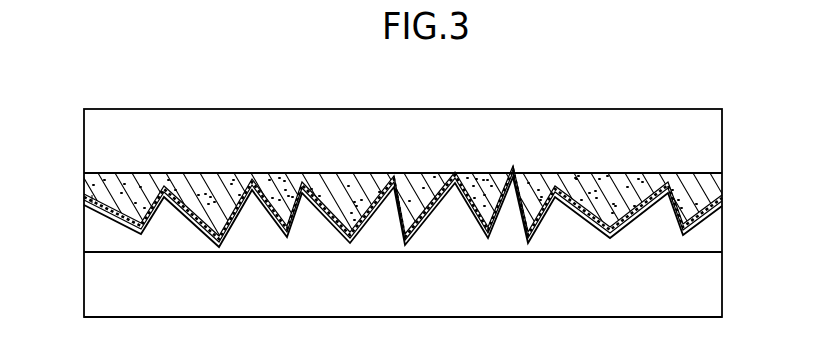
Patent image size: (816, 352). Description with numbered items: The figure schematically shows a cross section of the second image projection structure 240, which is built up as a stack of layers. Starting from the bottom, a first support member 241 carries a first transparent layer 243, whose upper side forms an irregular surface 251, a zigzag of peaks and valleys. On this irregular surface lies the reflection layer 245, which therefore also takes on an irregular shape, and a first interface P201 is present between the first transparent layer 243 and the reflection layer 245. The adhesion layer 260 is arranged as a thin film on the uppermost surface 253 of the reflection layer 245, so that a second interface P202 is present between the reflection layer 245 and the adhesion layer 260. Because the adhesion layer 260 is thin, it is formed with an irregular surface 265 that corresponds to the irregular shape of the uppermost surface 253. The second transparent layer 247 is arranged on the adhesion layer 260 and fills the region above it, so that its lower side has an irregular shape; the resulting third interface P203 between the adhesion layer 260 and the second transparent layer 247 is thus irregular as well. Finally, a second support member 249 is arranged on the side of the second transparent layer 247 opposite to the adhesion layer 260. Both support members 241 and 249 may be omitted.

The second image projection structure 240 is at (728, 102).
The second support member 249 is at (714, 120).
The irregular surface 265 is at (668, 190).
The second transparent layer 247 is at (690, 212).
The uppermost surface 253 is at (716, 199).
The adhesion layer 260 is at (717, 203).
The reflection layer 245 is at (718, 210).
The irregular surface 251 is at (698, 233).
The first transparent layer 243 is at (715, 246).
The first support member 241 is at (714, 285).
The third interface P203 is at (102, 197).
The second interface P202 is at (89, 196).
The first interface P201 is at (92, 212).